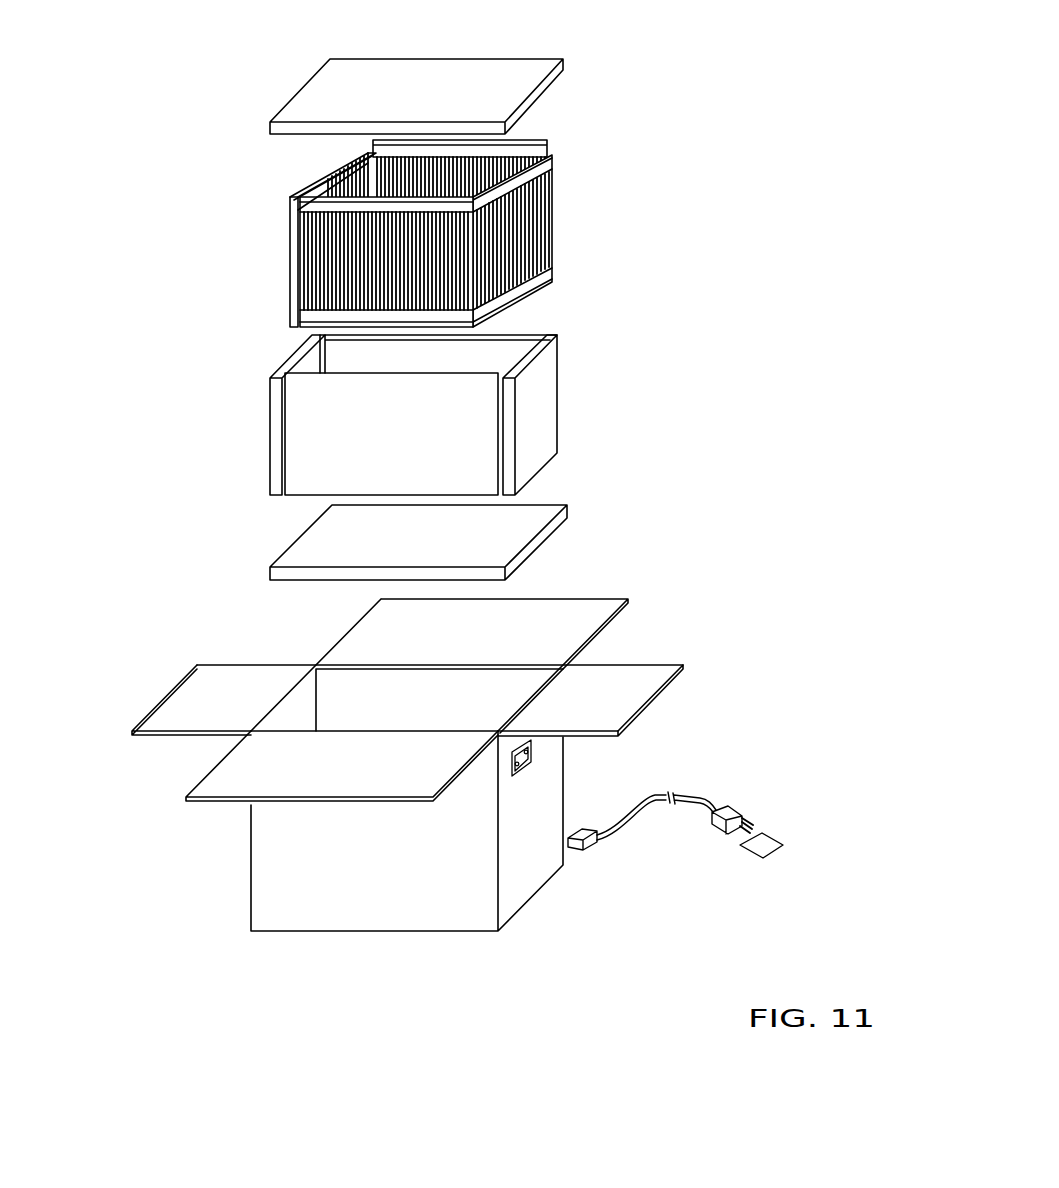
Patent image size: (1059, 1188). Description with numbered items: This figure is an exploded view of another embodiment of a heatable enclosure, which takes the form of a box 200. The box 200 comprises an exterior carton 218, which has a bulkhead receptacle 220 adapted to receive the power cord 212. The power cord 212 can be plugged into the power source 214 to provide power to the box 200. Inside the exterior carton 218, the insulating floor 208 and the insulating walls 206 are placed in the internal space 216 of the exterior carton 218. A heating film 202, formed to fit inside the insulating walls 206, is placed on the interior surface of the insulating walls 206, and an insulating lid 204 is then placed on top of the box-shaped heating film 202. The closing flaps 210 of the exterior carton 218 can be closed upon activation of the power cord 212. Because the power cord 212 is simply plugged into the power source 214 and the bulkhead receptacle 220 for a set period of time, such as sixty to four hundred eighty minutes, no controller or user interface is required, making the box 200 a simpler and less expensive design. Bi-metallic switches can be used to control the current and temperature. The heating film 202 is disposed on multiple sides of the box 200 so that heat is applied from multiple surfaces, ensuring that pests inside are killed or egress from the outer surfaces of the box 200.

The box 200 is at (138, 891).
The heating film 202 is at (533, 222).
The insulating lid 204 is at (483, 84).
The insulating walls 206 is at (473, 437).
The insulating floor 208 is at (483, 533).
The closing flaps 210 is at (601, 692).
The power cord 212 is at (690, 790).
The power source 214 is at (768, 845).
The internal space 216 is at (359, 694).
The exterior carton 218 is at (494, 769).
The bulkhead receptacle 220 is at (509, 766).